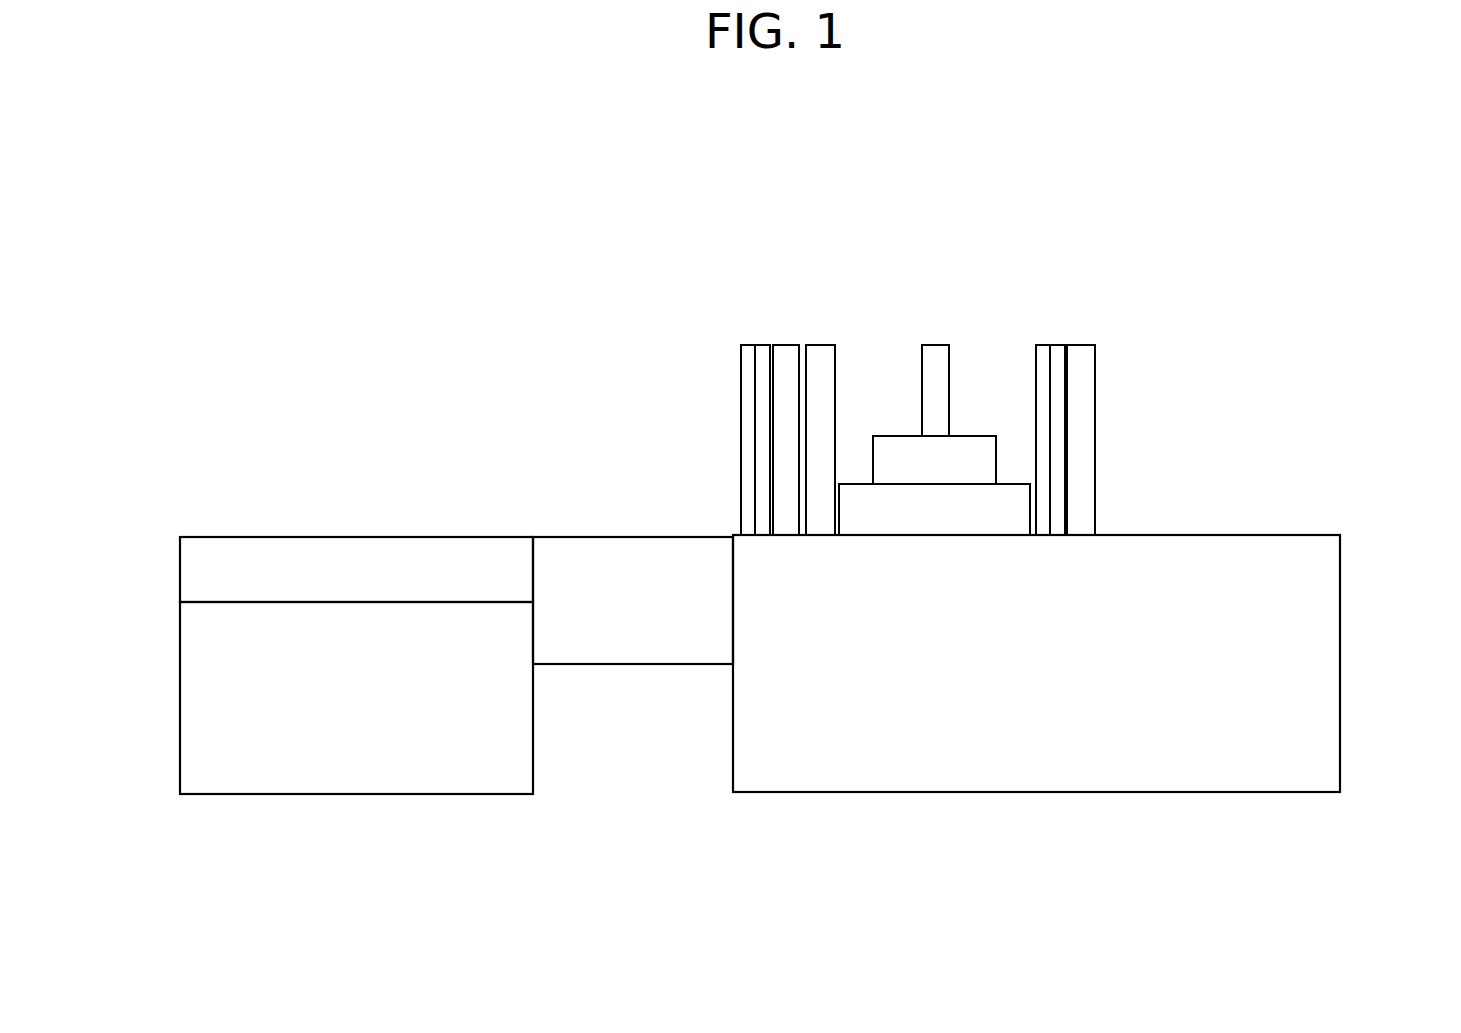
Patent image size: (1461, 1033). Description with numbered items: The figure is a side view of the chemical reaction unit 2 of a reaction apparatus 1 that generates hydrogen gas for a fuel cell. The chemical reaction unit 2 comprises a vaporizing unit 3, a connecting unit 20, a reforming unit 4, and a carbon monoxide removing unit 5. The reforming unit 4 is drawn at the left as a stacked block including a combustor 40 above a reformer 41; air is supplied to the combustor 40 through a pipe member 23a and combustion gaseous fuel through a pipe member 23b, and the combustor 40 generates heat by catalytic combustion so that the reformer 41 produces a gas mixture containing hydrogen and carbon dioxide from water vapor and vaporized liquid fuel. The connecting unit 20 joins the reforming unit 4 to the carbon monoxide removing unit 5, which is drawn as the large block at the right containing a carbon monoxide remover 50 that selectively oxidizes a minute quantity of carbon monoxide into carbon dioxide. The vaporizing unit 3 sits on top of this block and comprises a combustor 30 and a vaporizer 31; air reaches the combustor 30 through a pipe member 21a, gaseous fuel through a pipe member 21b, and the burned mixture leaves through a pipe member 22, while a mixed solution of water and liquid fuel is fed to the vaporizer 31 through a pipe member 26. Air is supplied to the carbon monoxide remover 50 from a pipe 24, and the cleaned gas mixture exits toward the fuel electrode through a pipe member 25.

The reaction apparatus 1 is at (342, 168).
The chemical reaction unit 2 is at (405, 343).
The vaporizing unit 3 is at (958, 369).
The reforming unit 4 is at (120, 528).
The carbon monoxide removing unit 5 is at (1079, 663).
The connecting unit 20 is at (637, 548).
The pipe member 21a is at (1043, 344).
The pipe member 21b is at (1057, 344).
The pipe member 22 is at (1085, 344).
The pipe member (air supplying passage) 23a is at (750, 344).
The pipe member (combustion fuel supplying passage) 23b is at (762, 344).
The pipe 24 is at (792, 344).
The pipe member (product exhausting passage) 25 is at (820, 344).
The pipe member (reactant supplying passage) 26 is at (938, 344).
The combustor 30 is at (1015, 483).
The vaporizer 31 is at (967, 435).
The combustor 40 is at (203, 568).
The reformer 41 is at (203, 656).
The carbon monoxide remover 50 is at (1340, 650).